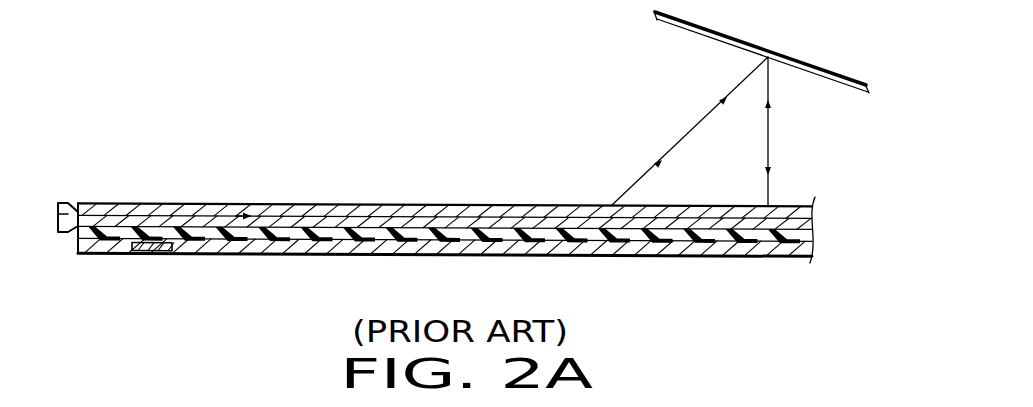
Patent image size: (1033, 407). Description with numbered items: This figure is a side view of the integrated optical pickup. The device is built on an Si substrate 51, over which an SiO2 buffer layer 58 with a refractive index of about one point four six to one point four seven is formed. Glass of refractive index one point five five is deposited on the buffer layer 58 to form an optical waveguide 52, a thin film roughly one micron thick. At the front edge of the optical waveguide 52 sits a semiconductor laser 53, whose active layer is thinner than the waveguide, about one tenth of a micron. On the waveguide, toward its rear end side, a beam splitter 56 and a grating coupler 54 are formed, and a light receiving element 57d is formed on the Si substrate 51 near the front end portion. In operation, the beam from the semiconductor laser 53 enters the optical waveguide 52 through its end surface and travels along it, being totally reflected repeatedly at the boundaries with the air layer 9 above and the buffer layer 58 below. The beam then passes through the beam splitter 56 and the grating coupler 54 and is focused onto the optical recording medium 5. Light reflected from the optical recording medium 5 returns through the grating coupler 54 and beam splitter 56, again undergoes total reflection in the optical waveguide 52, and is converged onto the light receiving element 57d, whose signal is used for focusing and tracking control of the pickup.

The optical recording medium 5 is at (834, 68).
The air layer 9 is at (404, 88).
The Si substrate 51 is at (812, 252).
The optical waveguide 52 is at (296, 204).
The semiconductor laser 53 is at (57, 203).
The grating coupler 54 is at (644, 206).
The beam splitter 56 is at (572, 204).
The light receiving element 57d is at (160, 255).
The SiO2 buffer layer 58 is at (812, 232).